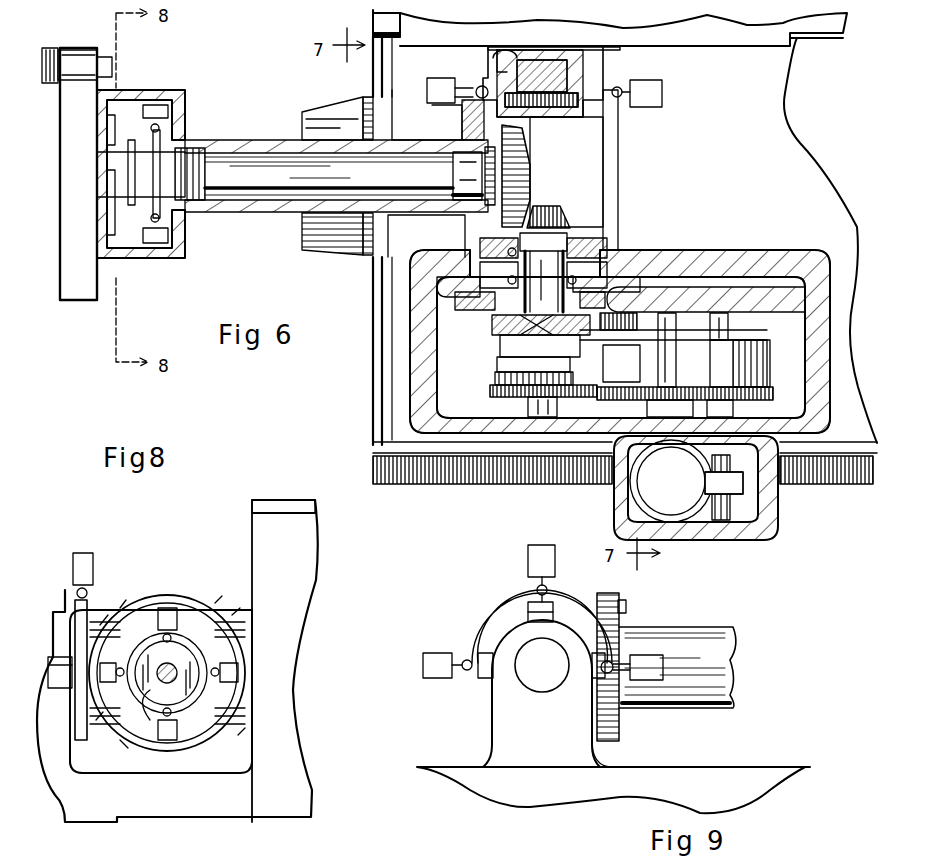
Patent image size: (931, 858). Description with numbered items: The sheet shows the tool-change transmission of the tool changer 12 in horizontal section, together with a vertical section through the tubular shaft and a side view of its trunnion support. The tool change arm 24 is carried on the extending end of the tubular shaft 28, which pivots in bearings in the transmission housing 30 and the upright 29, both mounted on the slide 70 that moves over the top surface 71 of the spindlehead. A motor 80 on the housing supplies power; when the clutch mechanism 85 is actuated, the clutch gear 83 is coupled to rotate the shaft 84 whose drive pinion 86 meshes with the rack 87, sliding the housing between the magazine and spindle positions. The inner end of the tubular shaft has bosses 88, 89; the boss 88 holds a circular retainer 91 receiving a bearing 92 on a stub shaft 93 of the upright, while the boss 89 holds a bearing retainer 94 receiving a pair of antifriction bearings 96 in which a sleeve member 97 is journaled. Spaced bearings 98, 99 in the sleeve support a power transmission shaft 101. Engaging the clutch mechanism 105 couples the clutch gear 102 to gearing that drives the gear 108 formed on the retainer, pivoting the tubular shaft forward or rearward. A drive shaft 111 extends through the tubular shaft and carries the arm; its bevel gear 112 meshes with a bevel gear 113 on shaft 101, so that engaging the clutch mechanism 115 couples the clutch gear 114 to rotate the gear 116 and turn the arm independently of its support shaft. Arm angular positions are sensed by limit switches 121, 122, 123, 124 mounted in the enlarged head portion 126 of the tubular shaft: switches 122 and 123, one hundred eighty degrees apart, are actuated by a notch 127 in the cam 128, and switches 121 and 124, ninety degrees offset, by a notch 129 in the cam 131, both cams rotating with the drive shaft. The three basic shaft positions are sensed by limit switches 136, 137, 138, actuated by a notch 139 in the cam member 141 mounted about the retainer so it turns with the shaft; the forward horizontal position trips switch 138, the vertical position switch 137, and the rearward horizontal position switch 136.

In FIG. 6, the tool changer 12 is at (279, 236).
In FIG. 6, the tool change arm 24 is at (77, 247).
In FIG. 6, the tubular shaft 28 is at (243, 207).
In FIG. 9, the tubular shaft 28 is at (718, 640).
In FIG. 6, the upright 29 is at (600, 50).
In FIG. 8, the upright 29 is at (57, 747).
In FIG. 9, the upright 29 is at (505, 738).
In FIG. 6, the transmission housing 30 is at (732, 262).
In FIG. 8, the transmission housing 30 is at (305, 535).
In FIG. 6, the slide 70 is at (398, 358).
In FIG. 8, the slide 70 is at (258, 795).
In FIG. 9, the slide 70 is at (742, 770).
In FIG. 6, the top surface 71 is at (386, 342).
In FIG. 6, the motor 80 is at (640, 480).
In FIG. 6, the clutch gear 83 is at (780, 403).
In FIG. 6, the shaft 84 is at (712, 535).
In FIG. 6, the clutch mechanism 85 is at (790, 326).
In FIG. 6, the drive pinion 86 is at (740, 480).
In FIG. 6, the rack 87 is at (832, 480).
In FIG. 6, the boss 88 is at (465, 128).
In FIG. 6, the boss 89 is at (383, 235).
In FIG. 6, the circular retainer 91 is at (612, 118).
In FIG. 6, the bearing 92 is at (566, 170).
In FIG. 6, the stub shaft 93 is at (510, 55).
In FIG. 6, the bearing retainer 94 is at (606, 250).
In FIG. 6, the antifriction bearings 96 is at (610, 265).
In FIG. 6, the sleeve member 97 is at (490, 310).
In FIG. 6, the bearing 98 is at (585, 232).
In FIG. 6, the bearing 99 is at (543, 272).
In FIG. 6, the power transmission shaft 101 is at (548, 348).
In FIG. 6, the clutch gear 102 is at (490, 390).
In FIG. 6, the clutch mechanism 105 is at (486, 381).
In FIG. 6, the gear 108 is at (472, 258).
In FIG. 6, the drive shaft 111 is at (228, 166).
In FIG. 8, the drive shaft 111 is at (165, 680).
In FIG. 6, the bevel gear 112 is at (531, 152).
In FIG. 6, the bevel gear 113 is at (540, 210).
In FIG. 6, the clutch gear 114 is at (600, 470).
In FIG. 6, the clutch mechanism 115 is at (528, 403).
In FIG. 6, the gear 116 is at (527, 405).
In FIG. 8, the limit switch 121 is at (210, 600).
In FIG. 6, the limit switch 122 is at (157, 243).
In FIG. 8, the limit switch 122 is at (240, 668).
In FIG. 6, the limit switch 123 is at (157, 110).
In FIG. 8, the limit switch 123 is at (90, 640).
In FIG. 8, the limit switch 124 is at (170, 742).
In FIG. 6, the enlarged head portion 126 is at (170, 96).
In FIG. 8, the enlarged head portion 126 is at (222, 620).
In FIG. 8, the notch 127 is at (170, 605).
In FIG. 6, the cam 128 is at (160, 143).
In FIG. 8, the cam 128 is at (200, 690).
In FIG. 8, the notch 129 is at (200, 618).
In FIG. 6, the cam 131 is at (130, 240).
In FIG. 8, the cam 131 is at (163, 676).
In FIG. 6, the limit switch 136 is at (650, 94).
In FIG. 9, the limit switch 136 is at (440, 658).
In FIG. 8, the limit switch 137 is at (80, 551).
In FIG. 9, the limit switch 137 is at (556, 560).
In FIG. 6, the limit switch 138 is at (426, 92).
In FIG. 9, the limit switch 138 is at (645, 655).
In FIG. 9, the notch 139 is at (620, 724).
In FIG. 6, the cam member 141 is at (487, 80).
In FIG. 8, the cam member 141 is at (88, 610).
In FIG. 9, the cam member 141 is at (513, 618).